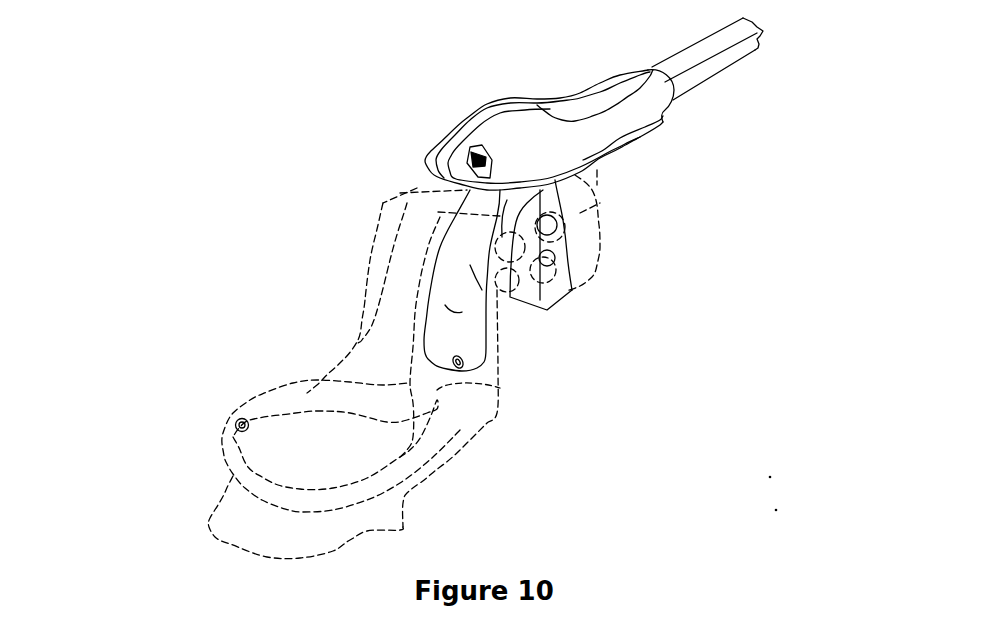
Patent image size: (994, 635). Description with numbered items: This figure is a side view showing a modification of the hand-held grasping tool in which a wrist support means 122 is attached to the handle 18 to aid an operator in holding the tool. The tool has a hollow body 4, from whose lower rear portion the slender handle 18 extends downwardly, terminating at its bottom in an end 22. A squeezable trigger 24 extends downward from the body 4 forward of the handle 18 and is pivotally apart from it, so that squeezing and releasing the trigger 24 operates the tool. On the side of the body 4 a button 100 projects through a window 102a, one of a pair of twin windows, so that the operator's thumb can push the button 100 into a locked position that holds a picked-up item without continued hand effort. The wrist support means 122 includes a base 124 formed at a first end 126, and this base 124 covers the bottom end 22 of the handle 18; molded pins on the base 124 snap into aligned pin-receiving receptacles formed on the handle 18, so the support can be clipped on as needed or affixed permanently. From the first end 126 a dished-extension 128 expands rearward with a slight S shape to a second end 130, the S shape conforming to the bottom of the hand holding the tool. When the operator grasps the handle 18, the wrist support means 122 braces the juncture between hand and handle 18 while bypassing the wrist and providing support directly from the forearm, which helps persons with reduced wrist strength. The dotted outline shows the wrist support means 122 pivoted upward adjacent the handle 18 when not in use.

The hollow body 4 is at (512, 125).
The button 100 is at (475, 148).
The window 102a is at (467, 147).
The handle 18 is at (450, 261).
The end 22 is at (480, 366).
The squeezable trigger 24 is at (567, 250).
The wrist support means 122 is at (208, 303).
The base 124 is at (400, 385).
The first end 126 is at (472, 388).
The dished-extension 128 is at (313, 497).
The second end 130 is at (235, 428).